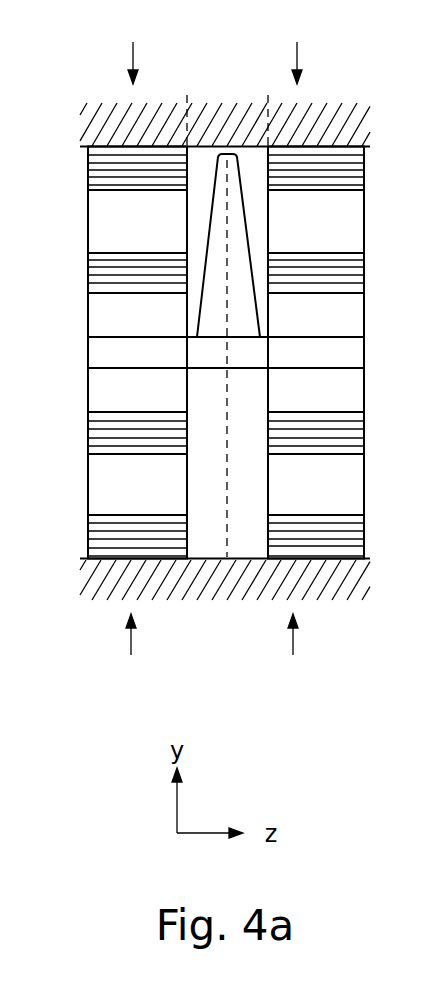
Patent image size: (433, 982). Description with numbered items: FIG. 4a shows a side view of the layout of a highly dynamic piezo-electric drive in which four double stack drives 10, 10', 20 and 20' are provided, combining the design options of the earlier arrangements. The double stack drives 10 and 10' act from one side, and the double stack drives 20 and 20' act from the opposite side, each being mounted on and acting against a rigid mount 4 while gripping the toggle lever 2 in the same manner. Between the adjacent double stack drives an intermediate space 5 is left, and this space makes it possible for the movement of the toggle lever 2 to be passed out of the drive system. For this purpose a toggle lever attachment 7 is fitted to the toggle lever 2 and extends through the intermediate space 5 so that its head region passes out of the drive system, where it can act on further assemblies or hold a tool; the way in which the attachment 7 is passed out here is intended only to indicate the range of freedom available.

The toggle lever 2 is at (132, 358).
The rigid mount 4 is at (113, 119).
The intermediate space 5 is at (187, 78).
The toggle lever attachment 7 is at (218, 284).
The double stack drive 10 is at (133, 43).
The double stack drive 10' is at (298, 43).
The second double stack drive 20 is at (130, 663).
The double stack drive 20' is at (295, 663).